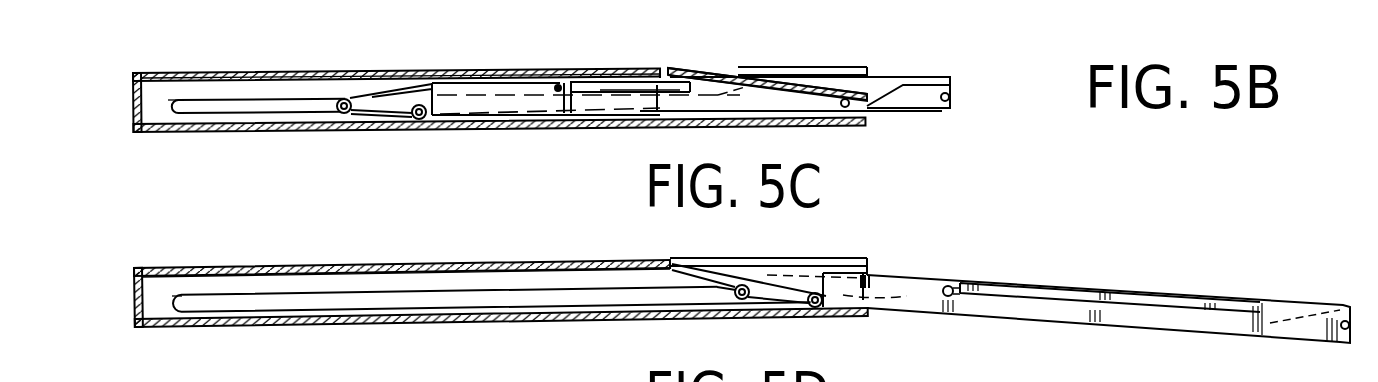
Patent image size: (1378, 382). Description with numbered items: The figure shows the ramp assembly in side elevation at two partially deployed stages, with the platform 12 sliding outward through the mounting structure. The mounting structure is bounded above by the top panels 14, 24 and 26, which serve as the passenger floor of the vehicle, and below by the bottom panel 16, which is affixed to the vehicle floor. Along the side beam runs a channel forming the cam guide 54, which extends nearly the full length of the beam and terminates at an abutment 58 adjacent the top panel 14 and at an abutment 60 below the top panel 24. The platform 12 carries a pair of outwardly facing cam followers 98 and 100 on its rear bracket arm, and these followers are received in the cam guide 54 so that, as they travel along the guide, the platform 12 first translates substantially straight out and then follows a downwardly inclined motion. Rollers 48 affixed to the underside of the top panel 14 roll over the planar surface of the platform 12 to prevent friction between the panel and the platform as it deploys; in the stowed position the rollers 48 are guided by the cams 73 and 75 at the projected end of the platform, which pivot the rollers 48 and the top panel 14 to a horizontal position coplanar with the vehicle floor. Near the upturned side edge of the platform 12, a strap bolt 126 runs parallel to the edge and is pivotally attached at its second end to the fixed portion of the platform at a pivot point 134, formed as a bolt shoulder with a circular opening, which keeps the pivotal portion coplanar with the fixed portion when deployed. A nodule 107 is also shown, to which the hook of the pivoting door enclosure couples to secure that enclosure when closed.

In FIG. 5B, the platform 12 is at (925, 68).
In FIG. 5C, the platform 12 is at (1175, 288).
In FIG. 5B, the top panel 14 is at (787, 86).
In FIG. 5C, the top panel 14 is at (773, 263).
In FIG. 5B, the bottom panel 16 is at (493, 124).
In FIG. 5C, the bottom panel 16 is at (517, 318).
In FIG. 5B, the top panel 24 is at (307, 72).
In FIG. 5C, the top panel 24 is at (313, 267).
In FIG. 5B, the top panel 26 is at (497, 71).
In FIG. 5C, the top panel 26 is at (561, 262).
In FIG. 5B, the rollers 48 is at (847, 110).
In FIG. 5C, the rollers 48 is at (873, 295).
In FIG. 5B, the cam guide 54 is at (273, 107).
In FIG. 5C, the cam guide 54 is at (437, 300).
In FIG. 5B, the abutment 58 is at (742, 74).
In FIG. 5C, the abutment 58 is at (808, 278).
In FIG. 5B, the abutment 60 is at (180, 100).
In FIG. 5C, the abutment 60 is at (173, 298).
In FIG. 5B, the cam 73 is at (927, 100).
In FIG. 5C, the cam 75 is at (1308, 330).
In FIG. 5B, the cam follower 98 is at (421, 119).
In FIG. 5C, the cam follower 98 is at (815, 308).
In FIG. 5B, the cam follower 100 is at (347, 113).
In FIG. 5C, the cam follower 100 is at (742, 300).
In FIG. 5B, the nodule 107 is at (949, 95).
In FIG. 5B, the strap bolt 126 is at (607, 90).
In FIG. 5C, the strap bolt 126 is at (1042, 298).
In FIG. 5B, the pivot point 134 is at (559, 86).
In FIG. 5C, the pivot point 134 is at (950, 286).